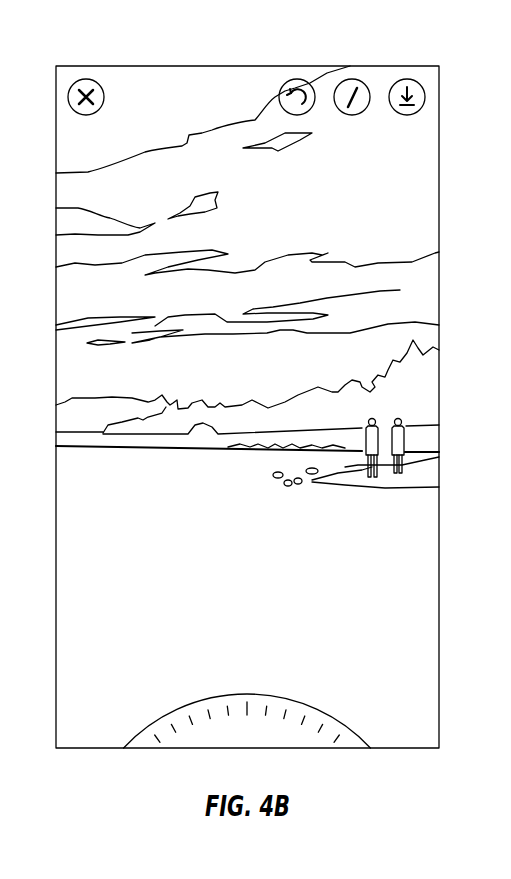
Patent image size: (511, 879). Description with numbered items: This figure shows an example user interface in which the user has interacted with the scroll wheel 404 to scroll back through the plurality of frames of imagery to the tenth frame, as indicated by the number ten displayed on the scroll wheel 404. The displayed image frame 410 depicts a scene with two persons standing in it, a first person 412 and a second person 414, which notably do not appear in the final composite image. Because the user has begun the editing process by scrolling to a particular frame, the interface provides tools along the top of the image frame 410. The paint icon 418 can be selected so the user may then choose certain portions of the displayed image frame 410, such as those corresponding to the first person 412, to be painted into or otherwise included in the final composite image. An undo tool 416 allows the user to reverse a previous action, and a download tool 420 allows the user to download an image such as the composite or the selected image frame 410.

The image frame 410 is at (155, 96).
The undo tool 416 is at (298, 70).
The paint icon 418 is at (359, 70).
The download tool 420 is at (414, 70).
The first person 412 is at (381, 404).
The second person 414 is at (407, 407).
The scroll wheel 404 is at (190, 742).